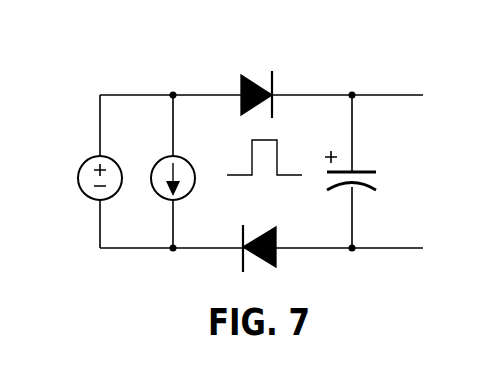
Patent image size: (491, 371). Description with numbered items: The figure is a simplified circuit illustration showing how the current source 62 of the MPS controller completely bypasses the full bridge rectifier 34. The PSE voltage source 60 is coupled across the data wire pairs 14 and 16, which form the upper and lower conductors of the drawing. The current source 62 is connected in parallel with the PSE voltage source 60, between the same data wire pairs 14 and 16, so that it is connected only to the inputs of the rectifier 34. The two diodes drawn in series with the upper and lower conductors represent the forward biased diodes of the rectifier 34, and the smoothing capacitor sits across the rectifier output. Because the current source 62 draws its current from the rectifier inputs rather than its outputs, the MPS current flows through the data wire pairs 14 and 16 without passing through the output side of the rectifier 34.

The rectifier 34 is at (320, 62).
The data wire pair 14 is at (153, 94).
The data wire pair 16 is at (138, 249).
The PSE voltage source 60 is at (88, 160).
The current source 62 is at (160, 160).